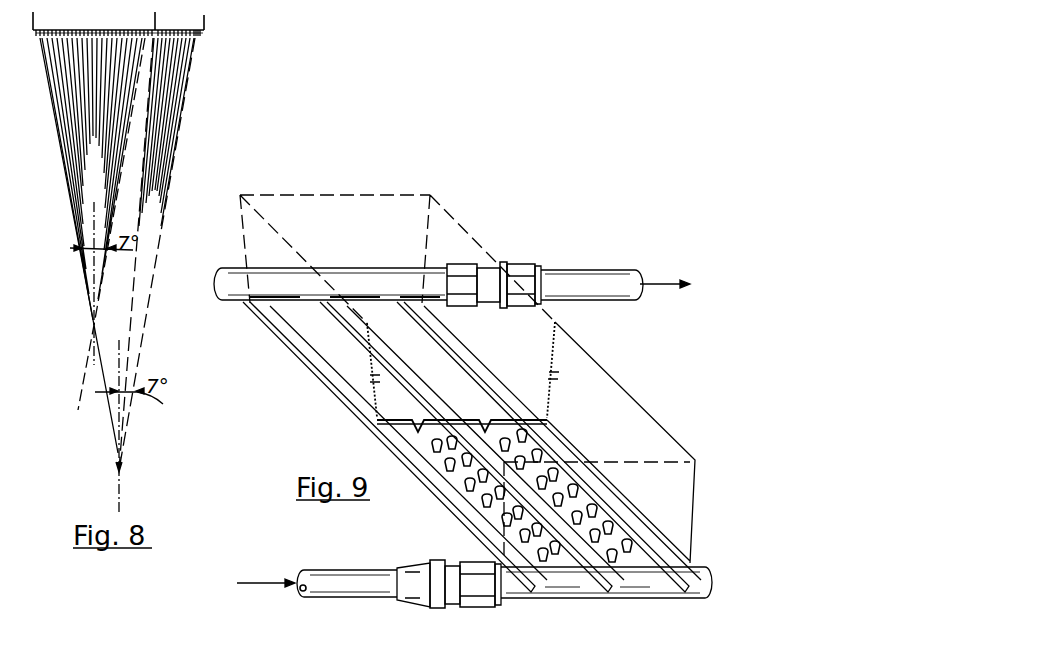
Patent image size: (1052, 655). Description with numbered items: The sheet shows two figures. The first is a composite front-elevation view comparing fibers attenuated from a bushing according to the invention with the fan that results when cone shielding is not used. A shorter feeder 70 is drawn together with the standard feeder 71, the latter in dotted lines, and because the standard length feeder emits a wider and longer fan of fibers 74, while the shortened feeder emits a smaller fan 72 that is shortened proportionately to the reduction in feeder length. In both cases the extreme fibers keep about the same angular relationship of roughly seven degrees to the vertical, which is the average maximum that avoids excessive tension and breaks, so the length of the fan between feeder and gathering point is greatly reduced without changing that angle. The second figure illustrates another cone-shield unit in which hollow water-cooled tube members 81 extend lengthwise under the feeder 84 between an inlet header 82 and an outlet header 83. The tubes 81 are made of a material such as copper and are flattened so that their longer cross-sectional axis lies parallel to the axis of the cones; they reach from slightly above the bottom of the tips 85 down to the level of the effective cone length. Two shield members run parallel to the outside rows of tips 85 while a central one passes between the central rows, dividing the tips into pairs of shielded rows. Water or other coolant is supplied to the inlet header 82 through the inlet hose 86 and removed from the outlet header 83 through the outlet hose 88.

In FIG. 8, the shorter feeder 70 is at (33, 30).
In FIG. 8, the standard feeder 71 is at (204, 30).
In FIG. 8, the smaller fan of fibers 72 is at (90, 110).
In FIG. 8, the fan of fibers 74 is at (165, 112).
In FIG. 9, the hollow water-cooled tube members 81 is at (531, 592).
In FIG. 9, the inlet header 82 is at (636, 600).
In FIG. 9, the outlet header 83 is at (228, 302).
In FIG. 9, the feeder 84 is at (638, 412).
In FIG. 9, the tips 85 is at (505, 518).
In FIG. 9, the inlet hose 86 is at (366, 568).
In FIG. 9, the outlet hose 88 is at (560, 262).